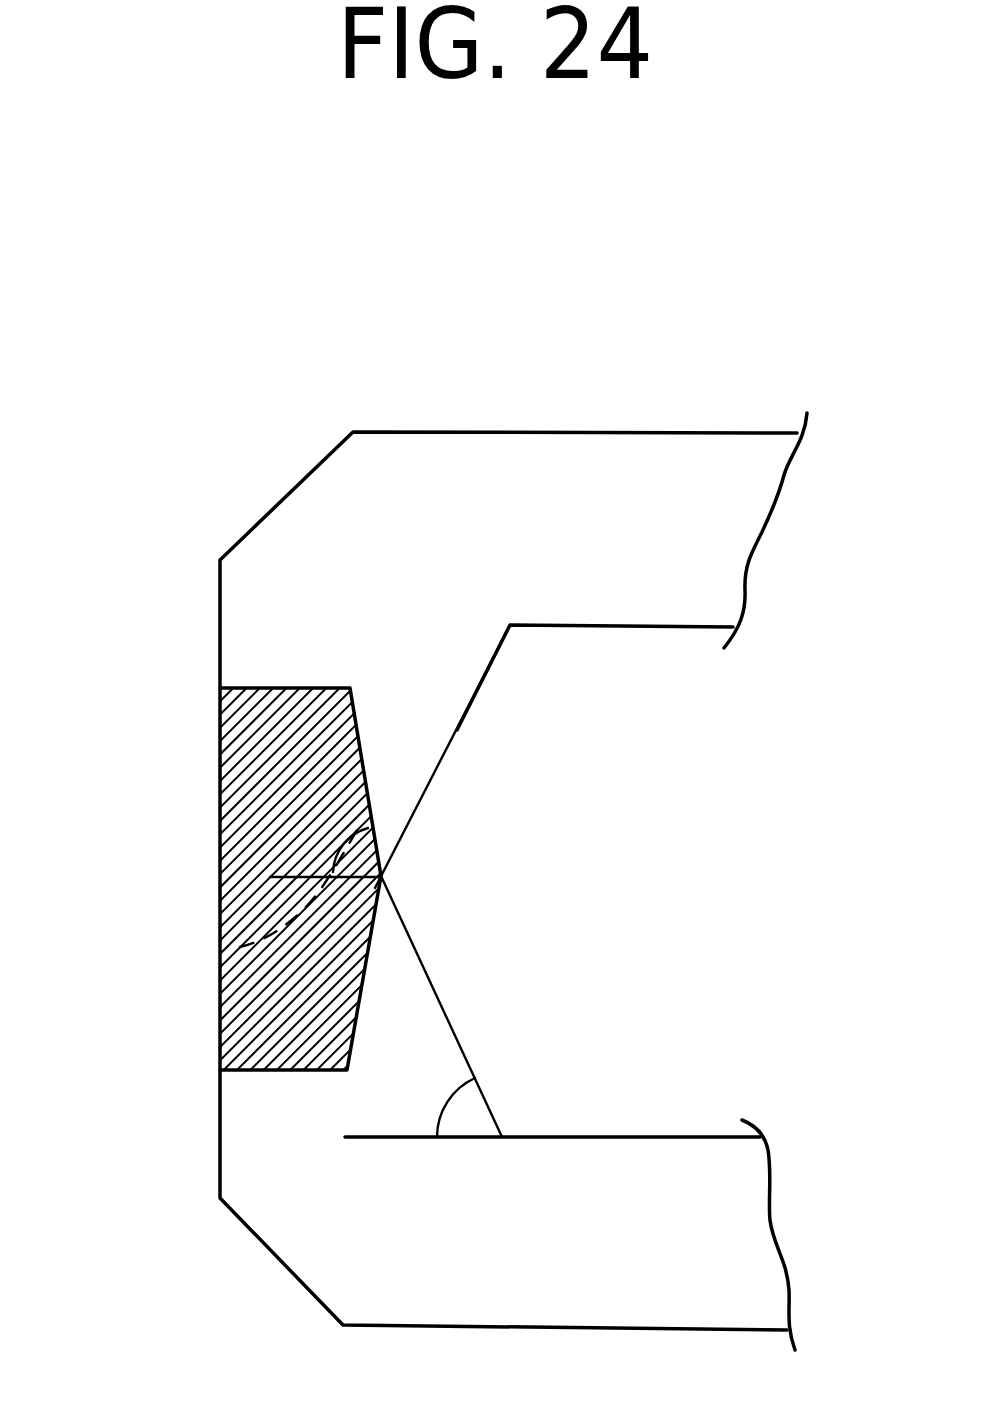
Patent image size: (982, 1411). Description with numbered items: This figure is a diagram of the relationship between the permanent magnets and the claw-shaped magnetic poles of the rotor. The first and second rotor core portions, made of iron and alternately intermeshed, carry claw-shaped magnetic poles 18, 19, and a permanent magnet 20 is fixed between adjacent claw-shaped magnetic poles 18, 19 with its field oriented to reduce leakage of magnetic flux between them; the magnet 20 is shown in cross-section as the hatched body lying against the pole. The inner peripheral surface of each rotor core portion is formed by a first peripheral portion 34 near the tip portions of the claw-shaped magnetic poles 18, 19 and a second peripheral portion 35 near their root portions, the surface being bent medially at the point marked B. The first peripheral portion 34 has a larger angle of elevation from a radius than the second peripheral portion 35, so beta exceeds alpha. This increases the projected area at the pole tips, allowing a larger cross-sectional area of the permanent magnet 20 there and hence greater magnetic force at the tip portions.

The claw-shaped magnetic pole 18 is at (310, 525).
The claw-shaped magnetic pole 19 is at (270, 1155).
The permanent magnet 20 is at (270, 833).
The first peripheral portion 34 is at (362, 752).
The second peripheral portion 35 is at (420, 955).
The point B is at (222, 948).